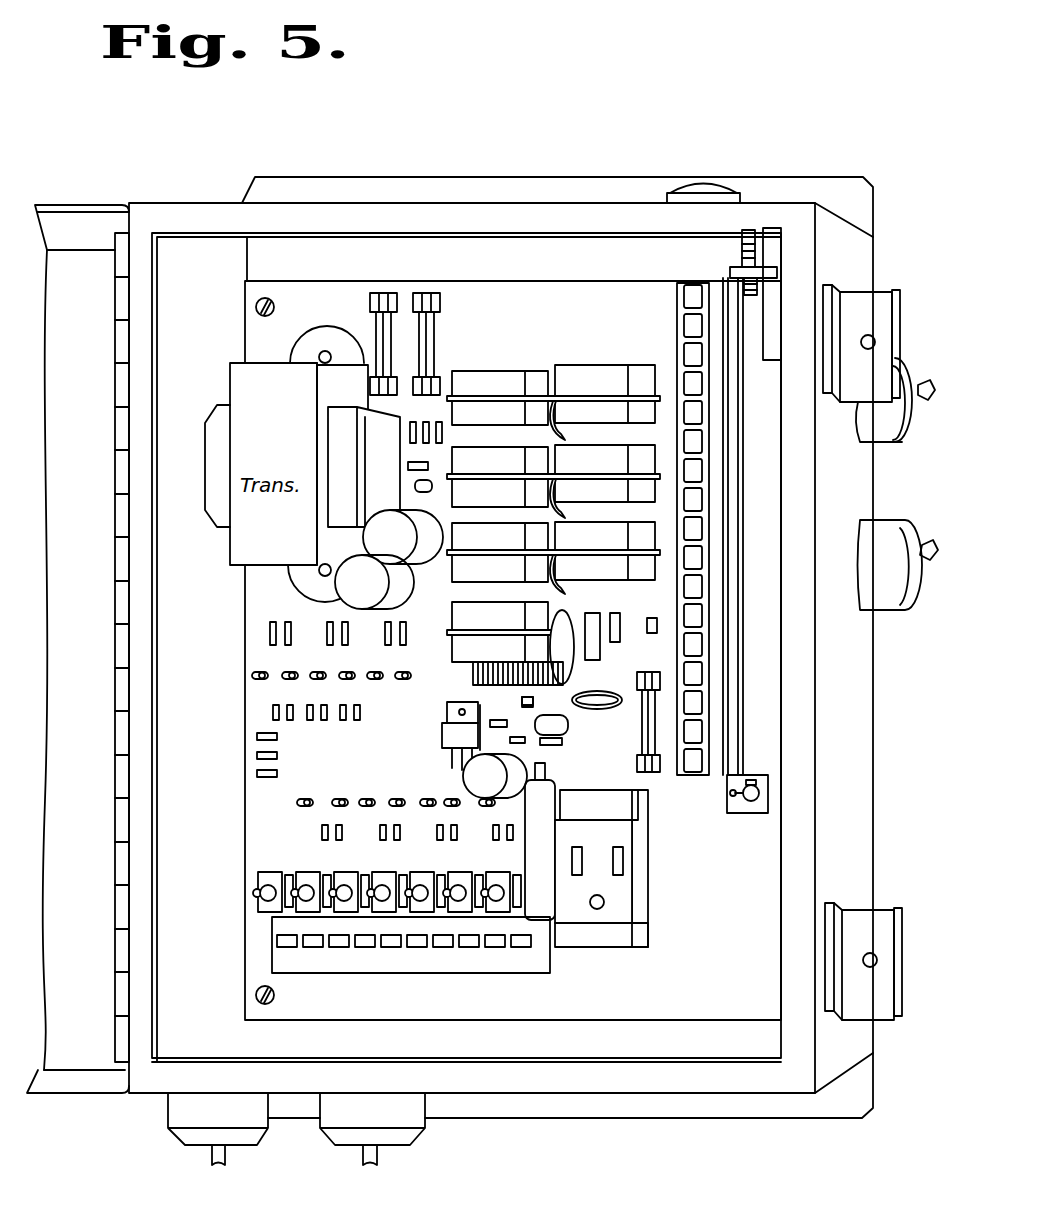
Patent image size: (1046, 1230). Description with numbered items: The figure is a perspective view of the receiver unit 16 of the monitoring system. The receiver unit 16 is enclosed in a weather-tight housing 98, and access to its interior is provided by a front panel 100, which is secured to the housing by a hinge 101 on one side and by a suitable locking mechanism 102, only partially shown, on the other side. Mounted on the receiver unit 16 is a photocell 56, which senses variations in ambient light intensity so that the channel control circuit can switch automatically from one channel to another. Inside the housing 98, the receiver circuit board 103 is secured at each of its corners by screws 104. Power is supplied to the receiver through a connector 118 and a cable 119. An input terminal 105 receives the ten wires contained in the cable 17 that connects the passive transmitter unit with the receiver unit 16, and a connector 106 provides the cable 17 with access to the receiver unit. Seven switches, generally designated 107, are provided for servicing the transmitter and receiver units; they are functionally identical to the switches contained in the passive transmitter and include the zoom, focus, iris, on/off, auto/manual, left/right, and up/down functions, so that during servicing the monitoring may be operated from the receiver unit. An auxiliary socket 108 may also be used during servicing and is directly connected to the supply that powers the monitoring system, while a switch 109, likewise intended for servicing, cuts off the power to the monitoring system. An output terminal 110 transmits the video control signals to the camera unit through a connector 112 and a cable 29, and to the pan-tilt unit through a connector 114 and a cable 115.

The receiver unit 16 is at (122, 175).
The weather-tight housing 98 is at (190, 205).
The front panel 100 is at (60, 263).
The hinge 101 is at (118, 343).
The screws 104 is at (256, 307).
The photocell 56 is at (725, 190).
The receiver circuit board 103 is at (596, 295).
The locking mechanism 102 is at (878, 302).
The cable 29 is at (928, 392).
The connector 112 is at (875, 420).
The cable 115 is at (930, 545).
The connector 114 is at (892, 597).
The output terminal 110 is at (690, 785).
The switch 109 is at (745, 812).
The auxiliary socket 108 is at (612, 940).
The input terminal 105 is at (392, 962).
The switches 107 is at (312, 878).
The connector 106 is at (410, 1100).
The connector 118 is at (172, 1107).
The cable 119 is at (212, 1156).
The cable 17 is at (380, 1156).